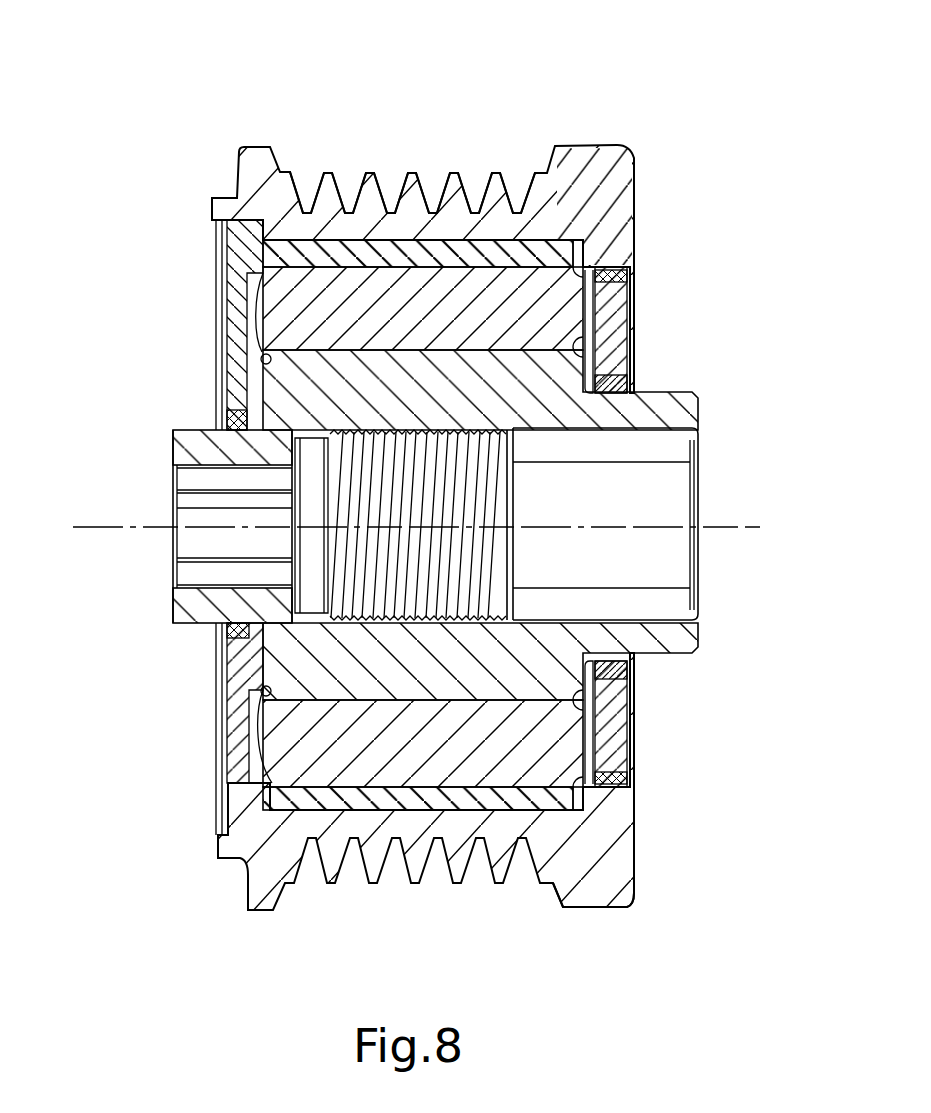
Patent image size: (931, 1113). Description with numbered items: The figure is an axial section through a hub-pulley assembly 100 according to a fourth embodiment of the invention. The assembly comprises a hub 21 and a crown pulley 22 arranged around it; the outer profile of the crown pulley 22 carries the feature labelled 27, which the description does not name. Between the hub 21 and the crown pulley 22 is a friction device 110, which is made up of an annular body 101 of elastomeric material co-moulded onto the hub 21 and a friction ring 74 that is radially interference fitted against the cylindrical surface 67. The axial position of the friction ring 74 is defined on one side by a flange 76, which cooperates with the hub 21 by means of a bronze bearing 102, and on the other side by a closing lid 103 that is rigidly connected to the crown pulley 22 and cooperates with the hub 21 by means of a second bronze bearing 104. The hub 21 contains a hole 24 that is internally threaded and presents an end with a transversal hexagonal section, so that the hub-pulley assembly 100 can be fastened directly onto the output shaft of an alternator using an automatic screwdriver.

The hub-pulley assembly 100 is at (218, 133).
The crown pulley 22 is at (604, 140).
The belt grooves 27 is at (380, 190).
The flange 76 is at (612, 796).
The cylindrical surface 67 is at (357, 255).
The hub 21 is at (165, 452).
The hole 24 is at (433, 432).
The second bronze bearing 104 is at (218, 429).
The closing lid 103 is at (240, 693).
The annular body 101 is at (268, 742).
The friction ring 74 is at (567, 239).
The friction device 110 is at (590, 280).
The bronze bearing 102 is at (620, 388).